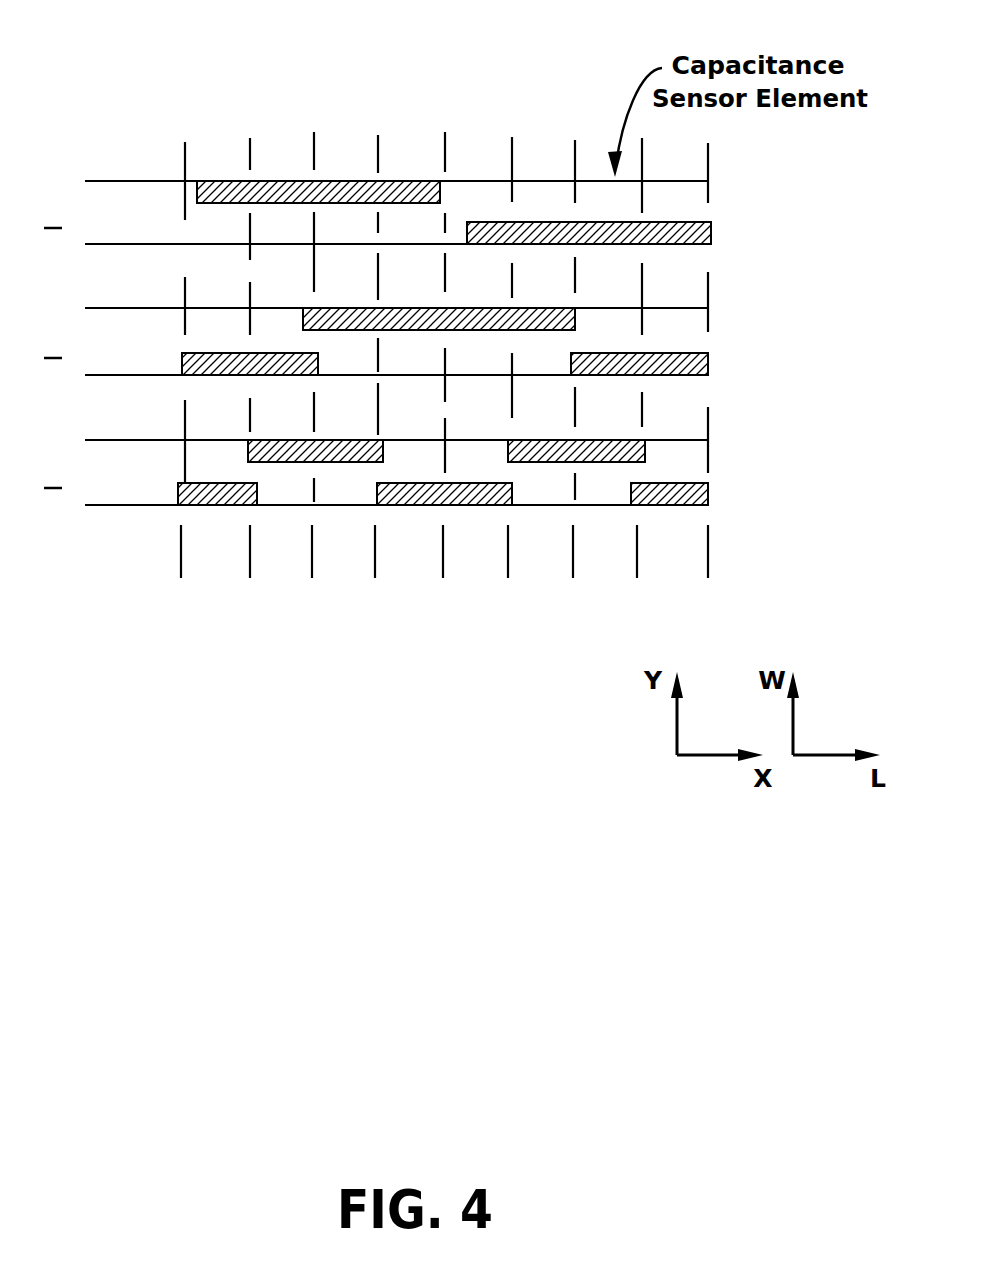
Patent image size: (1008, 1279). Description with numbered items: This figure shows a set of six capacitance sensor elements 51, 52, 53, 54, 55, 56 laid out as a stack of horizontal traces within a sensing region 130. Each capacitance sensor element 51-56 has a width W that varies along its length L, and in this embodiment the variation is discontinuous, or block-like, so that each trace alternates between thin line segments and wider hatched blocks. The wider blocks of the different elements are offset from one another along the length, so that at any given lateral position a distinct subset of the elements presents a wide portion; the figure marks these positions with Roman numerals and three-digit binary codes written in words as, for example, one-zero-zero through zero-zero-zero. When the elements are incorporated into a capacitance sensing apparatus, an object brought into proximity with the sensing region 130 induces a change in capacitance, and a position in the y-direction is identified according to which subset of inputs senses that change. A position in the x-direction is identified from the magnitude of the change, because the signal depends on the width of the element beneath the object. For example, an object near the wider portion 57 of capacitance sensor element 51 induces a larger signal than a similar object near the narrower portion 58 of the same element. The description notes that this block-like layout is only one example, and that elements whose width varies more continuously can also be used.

The sensing region 130 is at (413, 311).
The capacitance sensor element 51 is at (375, 129).
The capacitance sensor element 52 is at (140, 240).
The capacitance sensor element 53 is at (140, 305).
The capacitance sensor element 54 is at (140, 371).
The capacitance sensor element 55 is at (140, 436).
The capacitance sensor element 56 is at (140, 501).
The wider portion 57 is at (345, 180).
The narrower portion 58 is at (475, 180).